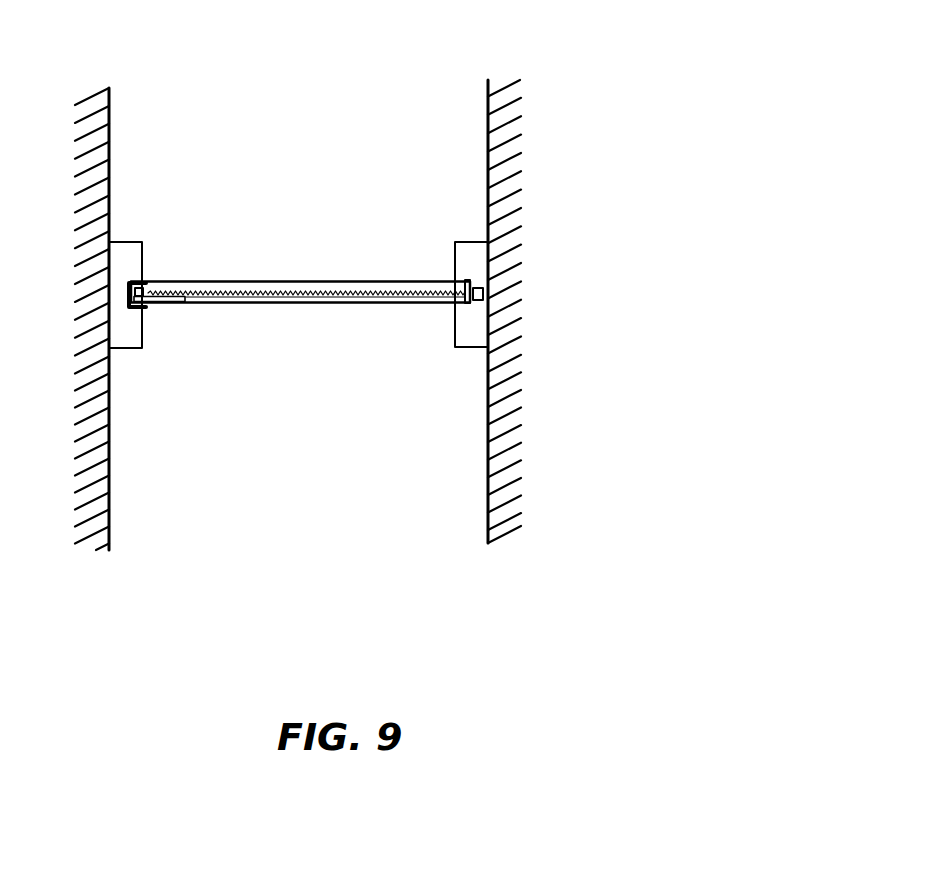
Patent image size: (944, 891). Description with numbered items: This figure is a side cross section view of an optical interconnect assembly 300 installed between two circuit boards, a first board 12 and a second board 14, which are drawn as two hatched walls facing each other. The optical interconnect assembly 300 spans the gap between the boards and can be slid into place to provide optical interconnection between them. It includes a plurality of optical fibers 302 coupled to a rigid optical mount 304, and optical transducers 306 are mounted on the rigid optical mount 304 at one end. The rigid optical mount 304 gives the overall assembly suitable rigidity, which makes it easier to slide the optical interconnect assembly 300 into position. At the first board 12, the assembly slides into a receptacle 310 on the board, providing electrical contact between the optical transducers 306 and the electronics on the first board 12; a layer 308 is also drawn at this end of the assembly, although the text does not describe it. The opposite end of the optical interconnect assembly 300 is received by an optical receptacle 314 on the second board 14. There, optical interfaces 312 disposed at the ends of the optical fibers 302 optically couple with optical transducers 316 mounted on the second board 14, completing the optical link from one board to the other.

The first circuit board 12 is at (103, 100).
The second circuit board 14 is at (501, 96).
The optical interconnect assembly 300 is at (291, 241).
The optical fibers 302 is at (243, 299).
The rigid optical mount 304 is at (197, 305).
The optical transducers 306 is at (141, 288).
The inner layer 308 is at (157, 307).
The receptacle 310 is at (123, 333).
The optical interfaces 312 is at (458, 281).
The optical receptacle 314 is at (463, 327).
The optical transducers on second board 316 is at (478, 300).